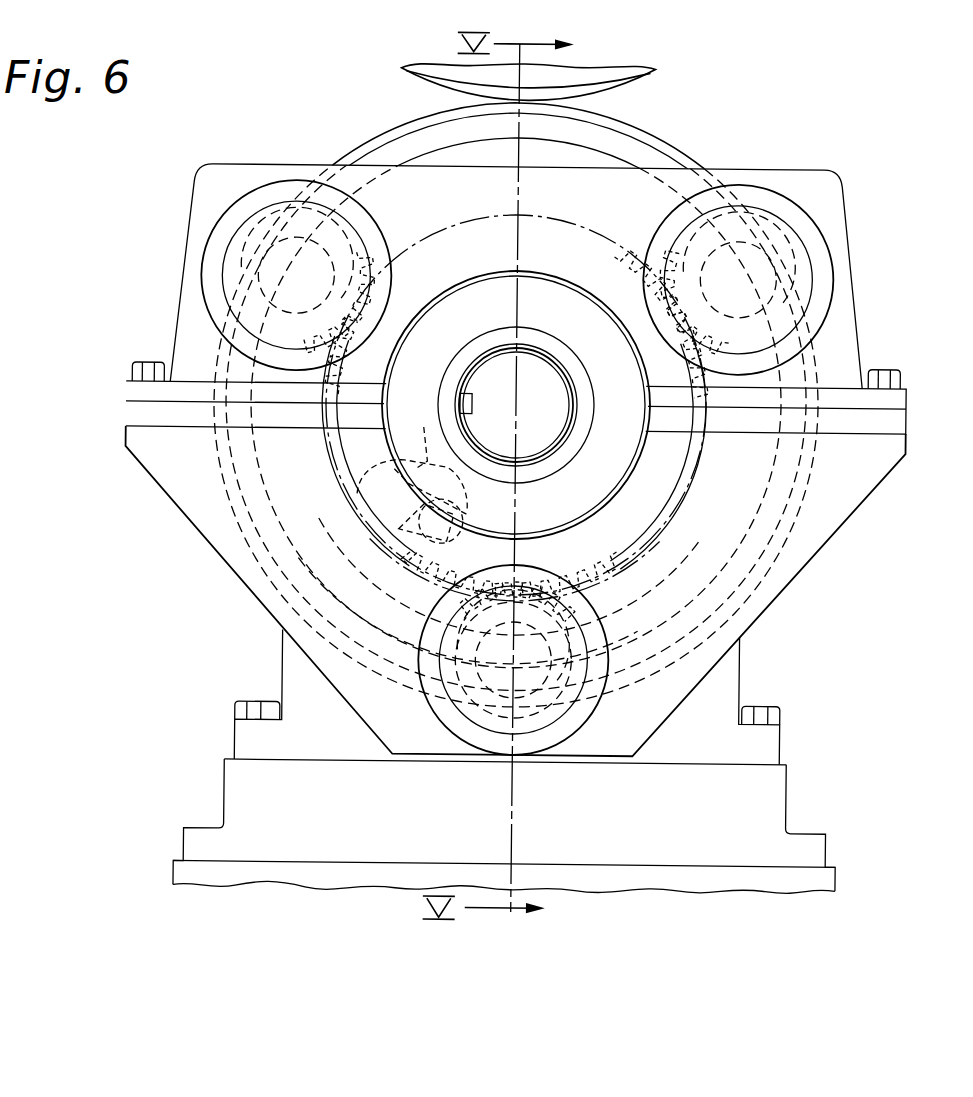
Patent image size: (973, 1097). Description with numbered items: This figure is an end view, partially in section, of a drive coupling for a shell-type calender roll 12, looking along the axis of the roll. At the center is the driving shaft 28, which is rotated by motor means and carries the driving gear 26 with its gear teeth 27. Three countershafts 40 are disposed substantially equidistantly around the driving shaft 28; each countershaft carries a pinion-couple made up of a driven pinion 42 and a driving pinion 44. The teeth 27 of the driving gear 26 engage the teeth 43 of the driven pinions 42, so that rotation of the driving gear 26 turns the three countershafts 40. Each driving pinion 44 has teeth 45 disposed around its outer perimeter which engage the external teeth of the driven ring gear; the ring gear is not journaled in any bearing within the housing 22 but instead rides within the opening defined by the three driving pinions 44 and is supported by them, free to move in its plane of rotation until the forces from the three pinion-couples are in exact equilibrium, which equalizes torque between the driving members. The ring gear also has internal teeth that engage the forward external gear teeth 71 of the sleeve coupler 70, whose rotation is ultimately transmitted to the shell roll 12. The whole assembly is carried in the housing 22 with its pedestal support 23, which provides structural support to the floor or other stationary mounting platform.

The shell-type calender roll 12 is at (638, 132).
The housing 22 is at (866, 300).
The pedestal support 23 is at (784, 741).
The driving gear 26 is at (586, 236).
The gear teeth 27 is at (626, 574).
The driving shaft 28 is at (545, 370).
The countershaft 40 is at (258, 262).
The driven pinion 42 is at (582, 636).
The teeth 43 is at (583, 610).
The driving pinion 44 is at (440, 638).
The teeth 45 is at (420, 590).
The sleeve coupler 70 is at (419, 431).
The forward external gear teeth 71 is at (366, 516).